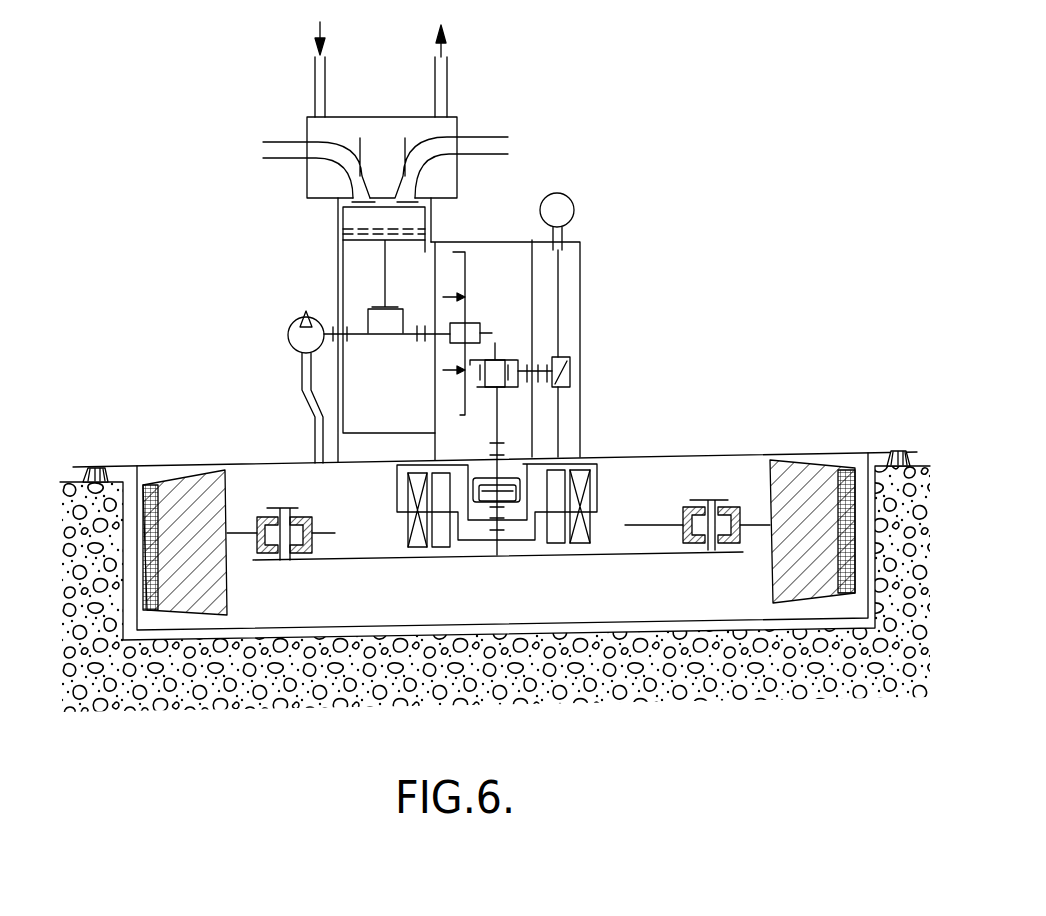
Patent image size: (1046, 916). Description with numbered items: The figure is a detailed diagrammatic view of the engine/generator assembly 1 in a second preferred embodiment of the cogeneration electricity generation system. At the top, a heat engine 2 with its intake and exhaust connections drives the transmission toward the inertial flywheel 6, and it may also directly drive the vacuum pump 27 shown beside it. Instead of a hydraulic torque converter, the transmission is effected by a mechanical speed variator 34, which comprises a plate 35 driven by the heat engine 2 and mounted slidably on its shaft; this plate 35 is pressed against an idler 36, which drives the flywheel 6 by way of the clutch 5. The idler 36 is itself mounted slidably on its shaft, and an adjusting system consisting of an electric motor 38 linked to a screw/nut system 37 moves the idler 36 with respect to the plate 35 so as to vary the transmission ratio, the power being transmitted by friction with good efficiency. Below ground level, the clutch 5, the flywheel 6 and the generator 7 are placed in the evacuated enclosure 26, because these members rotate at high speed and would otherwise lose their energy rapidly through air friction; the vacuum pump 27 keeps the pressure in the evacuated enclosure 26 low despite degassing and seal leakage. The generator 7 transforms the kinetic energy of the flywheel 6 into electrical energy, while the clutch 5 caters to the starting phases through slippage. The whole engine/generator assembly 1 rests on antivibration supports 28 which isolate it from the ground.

The engine/generator assembly 1 is at (230, 343).
The heat engine 2 is at (288, 200).
The clutch 5 is at (513, 470).
The inertial flywheel 6 is at (805, 483).
The generator 7 is at (597, 462).
The evacuated enclosure 26 is at (245, 468).
The vacuum pump 27 is at (290, 330).
The antivibration supports 28 is at (93, 468).
The mechanical speed variator 34 is at (598, 249).
The plate 35 is at (480, 252).
The idler 36 is at (510, 360).
The screw/nut system 37 is at (570, 377).
The electric motor 38 is at (572, 200).